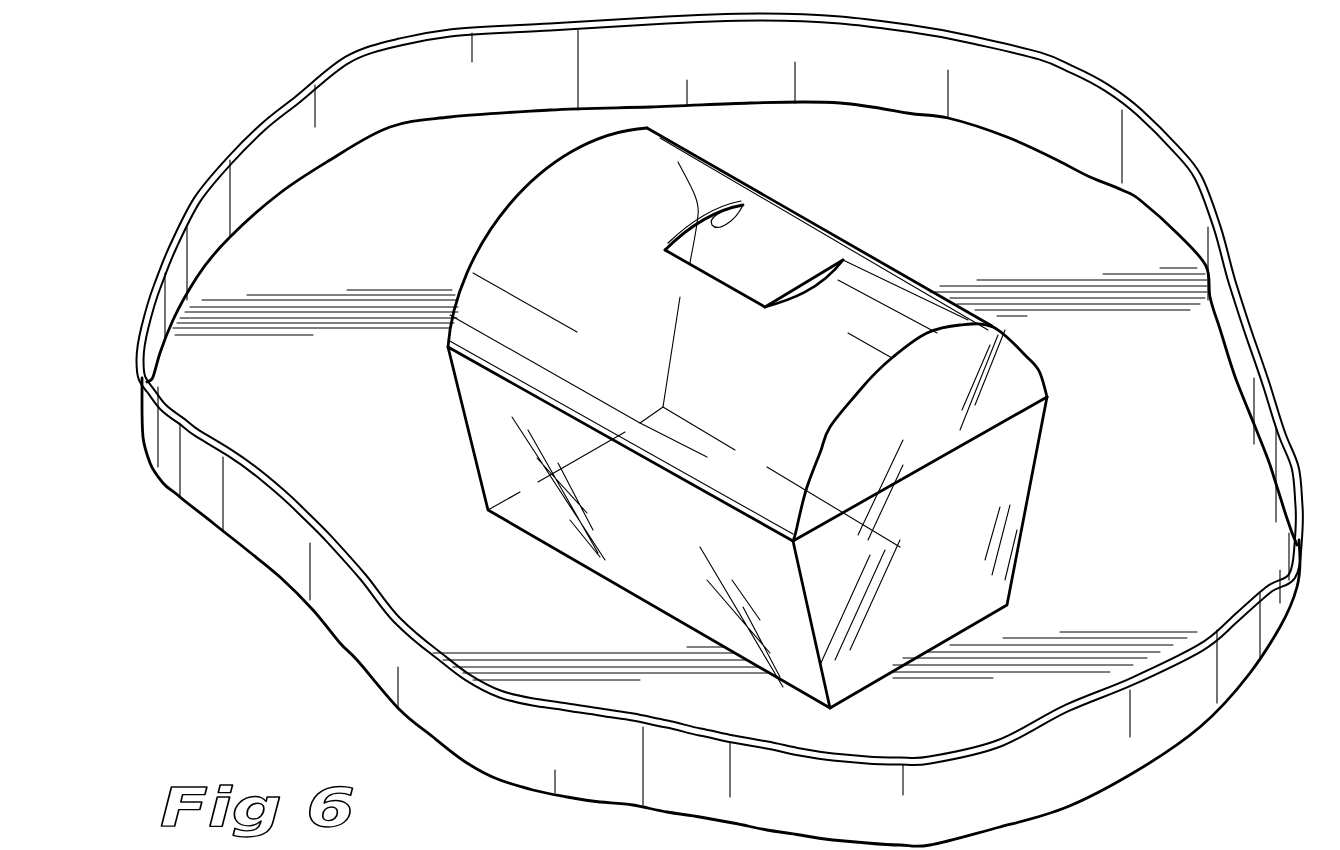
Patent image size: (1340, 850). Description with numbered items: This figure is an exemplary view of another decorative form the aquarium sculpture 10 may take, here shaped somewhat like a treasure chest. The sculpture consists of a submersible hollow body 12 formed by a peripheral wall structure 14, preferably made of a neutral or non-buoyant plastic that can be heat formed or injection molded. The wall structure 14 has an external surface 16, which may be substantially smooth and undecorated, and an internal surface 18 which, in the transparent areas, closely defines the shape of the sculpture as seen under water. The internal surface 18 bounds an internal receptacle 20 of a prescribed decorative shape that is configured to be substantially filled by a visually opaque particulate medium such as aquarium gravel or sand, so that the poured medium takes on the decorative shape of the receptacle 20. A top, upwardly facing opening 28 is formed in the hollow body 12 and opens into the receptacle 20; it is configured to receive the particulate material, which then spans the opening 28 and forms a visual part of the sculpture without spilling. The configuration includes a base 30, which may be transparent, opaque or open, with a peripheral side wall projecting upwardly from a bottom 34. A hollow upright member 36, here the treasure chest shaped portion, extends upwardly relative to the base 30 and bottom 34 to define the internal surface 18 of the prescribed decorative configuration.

The case and tray assembly 10 is at (1195, 74).
The submersible hollow body 12 is at (1048, 444).
The peripheral wall structure 14 is at (140, 393).
The external surface 16 is at (533, 253).
The internal surface 18 is at (745, 220).
The internal receptacle 20 is at (763, 250).
The upwardly facing opening 28 is at (697, 230).
The base 30 is at (240, 562).
The bottom 34 is at (318, 228).
The hollow upright member 36 is at (1022, 373).